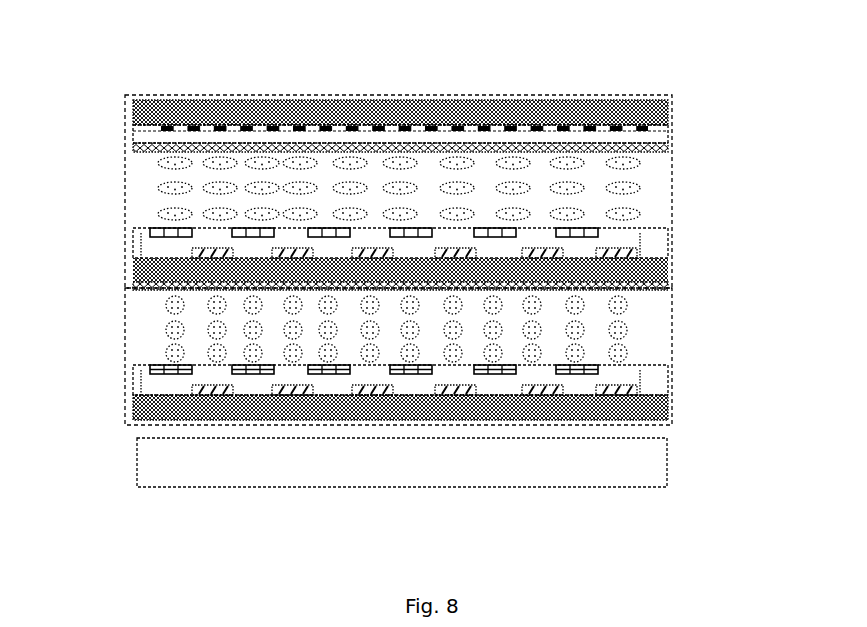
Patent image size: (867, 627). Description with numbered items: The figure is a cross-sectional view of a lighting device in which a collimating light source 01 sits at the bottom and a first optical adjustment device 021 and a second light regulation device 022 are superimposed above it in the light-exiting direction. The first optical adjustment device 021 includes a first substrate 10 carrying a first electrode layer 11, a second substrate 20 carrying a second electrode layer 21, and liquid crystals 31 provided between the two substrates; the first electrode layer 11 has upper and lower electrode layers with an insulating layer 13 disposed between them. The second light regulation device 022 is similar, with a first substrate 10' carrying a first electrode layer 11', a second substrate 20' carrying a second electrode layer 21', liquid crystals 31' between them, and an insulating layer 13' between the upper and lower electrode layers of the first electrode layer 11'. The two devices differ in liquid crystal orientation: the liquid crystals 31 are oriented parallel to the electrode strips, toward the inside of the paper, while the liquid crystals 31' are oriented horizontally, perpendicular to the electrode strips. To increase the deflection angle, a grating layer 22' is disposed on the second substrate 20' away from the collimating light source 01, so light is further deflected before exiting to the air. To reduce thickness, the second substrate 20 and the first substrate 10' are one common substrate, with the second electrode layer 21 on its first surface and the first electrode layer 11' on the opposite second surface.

The collimating light source 01 is at (637, 475).
The first optical adjustment device 021 is at (128, 343).
The second light regulation device 022 is at (612, 95).
The first substrate 10 is at (450, 426).
The first electrode layer 11 is at (349, 363).
The insulating layer 13 is at (473, 388).
The second substrate 20 is at (486, 282).
The second electrode layer 21 is at (459, 303).
The liquid crystals 31 is at (455, 329).
The first substrate 10' is at (358, 249).
The first electrode layer 11' is at (349, 217).
The insulating layer 13' is at (473, 250).
The second substrate 20' is at (381, 83).
The second electrode layer 21' is at (361, 126).
The grating layer 22' is at (400, 77).
The liquid crystals 31' is at (450, 188).